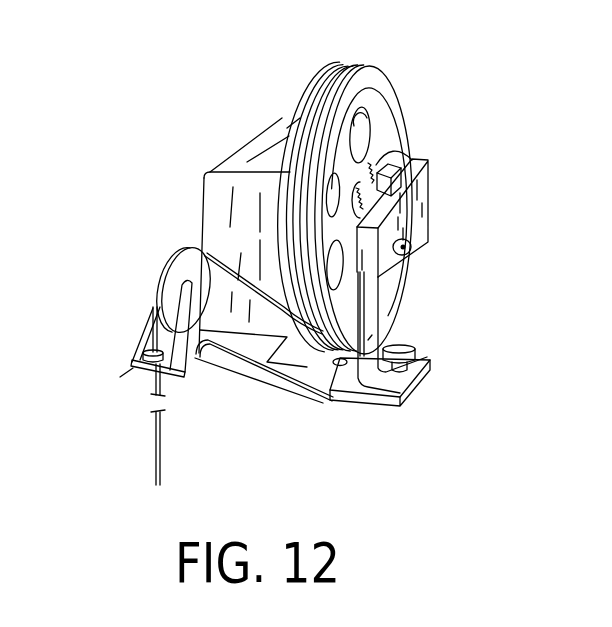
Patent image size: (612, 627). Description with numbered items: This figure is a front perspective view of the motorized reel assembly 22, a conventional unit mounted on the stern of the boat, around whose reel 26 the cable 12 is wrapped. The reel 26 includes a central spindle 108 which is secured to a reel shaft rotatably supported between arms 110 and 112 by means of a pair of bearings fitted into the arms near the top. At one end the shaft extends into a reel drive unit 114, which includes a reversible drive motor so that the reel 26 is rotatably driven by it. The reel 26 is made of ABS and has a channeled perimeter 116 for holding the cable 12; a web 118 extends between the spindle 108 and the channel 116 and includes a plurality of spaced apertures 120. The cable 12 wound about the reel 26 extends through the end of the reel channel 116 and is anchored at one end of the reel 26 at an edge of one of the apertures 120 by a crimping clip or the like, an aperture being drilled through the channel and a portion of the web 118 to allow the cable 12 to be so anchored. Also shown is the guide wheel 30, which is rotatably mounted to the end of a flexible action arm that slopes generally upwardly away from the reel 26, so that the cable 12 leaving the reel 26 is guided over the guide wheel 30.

The cable 12 is at (163, 434).
The motorized reel assembly 22 is at (142, 100).
The reel 26 is at (412, 62).
The guide wheel 30 is at (160, 258).
The central spindle 108 is at (384, 152).
The arm 110 is at (304, 354).
The arm 112 is at (378, 308).
The reel drive unit 114 is at (261, 104).
The channeled perimeter 116 is at (343, 66).
The web 118 is at (376, 138).
The spaced apertures 120 is at (358, 121).